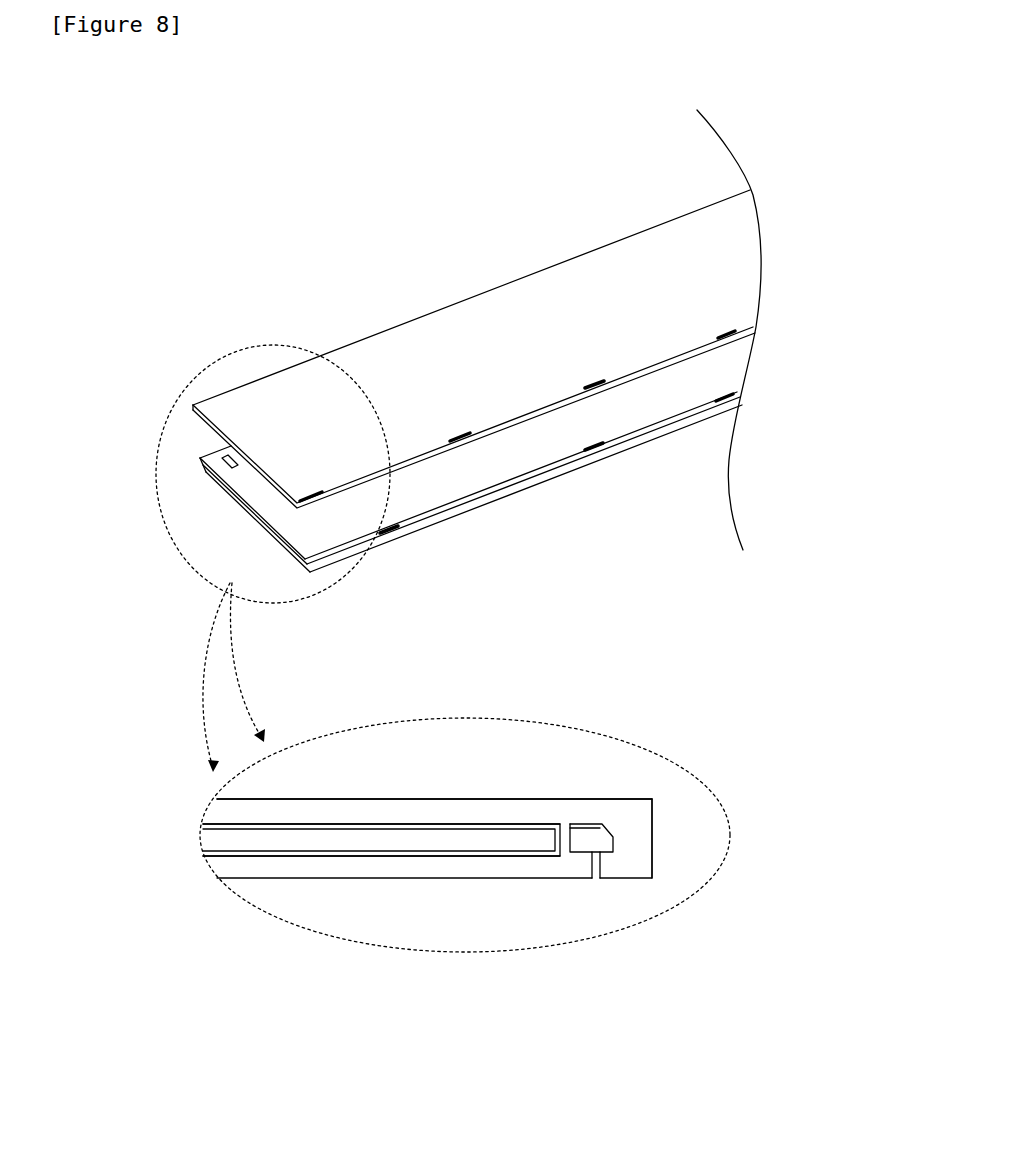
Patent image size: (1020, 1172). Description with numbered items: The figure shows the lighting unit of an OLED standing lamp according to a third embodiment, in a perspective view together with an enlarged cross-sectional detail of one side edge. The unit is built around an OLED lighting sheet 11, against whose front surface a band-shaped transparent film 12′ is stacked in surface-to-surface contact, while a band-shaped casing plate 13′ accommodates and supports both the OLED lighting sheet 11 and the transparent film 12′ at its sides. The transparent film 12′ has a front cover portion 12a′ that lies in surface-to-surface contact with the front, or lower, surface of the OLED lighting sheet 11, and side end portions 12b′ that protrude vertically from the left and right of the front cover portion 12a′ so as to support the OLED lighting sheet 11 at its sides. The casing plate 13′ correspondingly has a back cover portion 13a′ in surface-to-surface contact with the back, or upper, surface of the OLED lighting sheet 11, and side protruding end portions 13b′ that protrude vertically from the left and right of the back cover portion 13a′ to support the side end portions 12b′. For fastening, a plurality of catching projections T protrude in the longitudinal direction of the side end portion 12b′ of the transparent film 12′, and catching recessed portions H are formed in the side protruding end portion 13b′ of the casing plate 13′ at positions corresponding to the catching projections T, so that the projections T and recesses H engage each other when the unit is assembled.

The OLED lighting sheet 11 is at (313, 848).
The transparent film 12′ is at (437, 335).
The front cover portion 12a′ is at (563, 384).
The side end portion 12b′ is at (578, 848).
The casing plate 13′ is at (523, 485).
The back cover portion 13a′ is at (586, 441).
The side protruding end portion 13b′ is at (648, 838).
The catching projection T is at (458, 447).
The catching recessed portion H is at (233, 458).